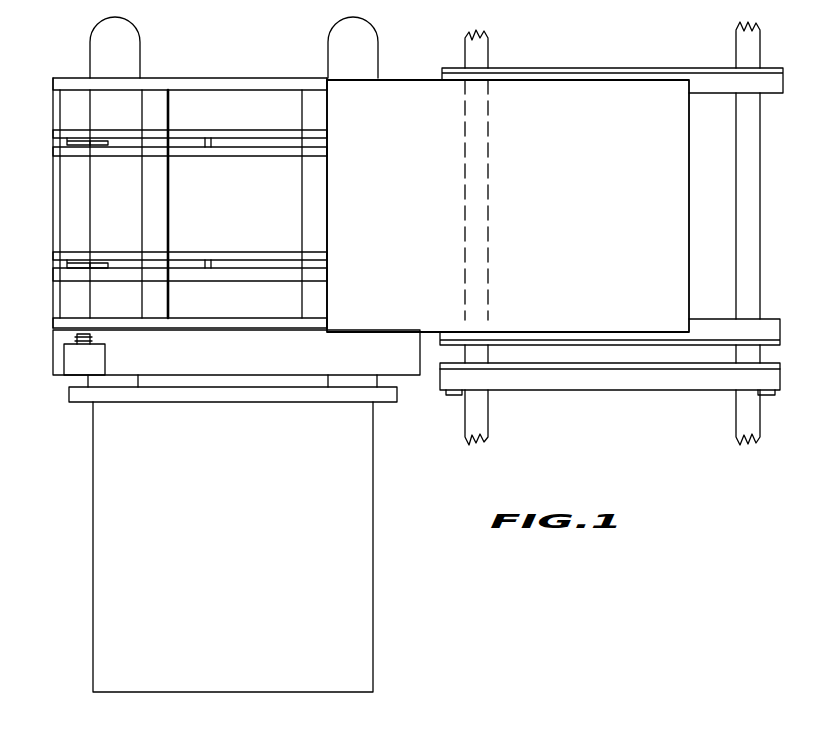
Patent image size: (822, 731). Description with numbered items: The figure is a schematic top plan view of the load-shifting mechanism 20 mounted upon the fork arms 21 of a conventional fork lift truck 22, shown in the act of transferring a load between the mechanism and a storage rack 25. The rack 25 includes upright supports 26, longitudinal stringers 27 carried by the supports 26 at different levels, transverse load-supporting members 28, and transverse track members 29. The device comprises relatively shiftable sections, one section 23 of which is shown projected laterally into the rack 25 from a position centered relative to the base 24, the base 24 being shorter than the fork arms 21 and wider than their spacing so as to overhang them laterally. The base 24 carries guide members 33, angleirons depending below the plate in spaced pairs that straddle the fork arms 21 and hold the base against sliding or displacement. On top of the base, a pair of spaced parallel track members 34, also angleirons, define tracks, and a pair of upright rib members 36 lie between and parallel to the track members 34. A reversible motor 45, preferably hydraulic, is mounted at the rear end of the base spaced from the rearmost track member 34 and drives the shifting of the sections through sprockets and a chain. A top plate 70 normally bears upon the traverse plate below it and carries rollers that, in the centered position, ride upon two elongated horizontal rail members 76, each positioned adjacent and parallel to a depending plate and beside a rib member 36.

The load-shifting mechanism 20 is at (286, 70).
The fork arms 21 is at (125, 53).
The fork lift truck 22 is at (352, 551).
The shiftable section 23 is at (410, 92).
The base 24 is at (68, 112).
The rack 25 is at (595, 396).
The upright supports 26 is at (452, 397).
The longitudinal stringers 27 is at (480, 412).
The transverse load-supporting members 28 is at (660, 383).
The transverse track members 29 is at (728, 86).
The guide members 33 is at (153, 205).
The track members 34 is at (196, 84).
The upright wall or rib members 36 is at (214, 162).
The motor 45 is at (95, 359).
The top plate 70 is at (340, 218).
The rail members 76 is at (184, 133).